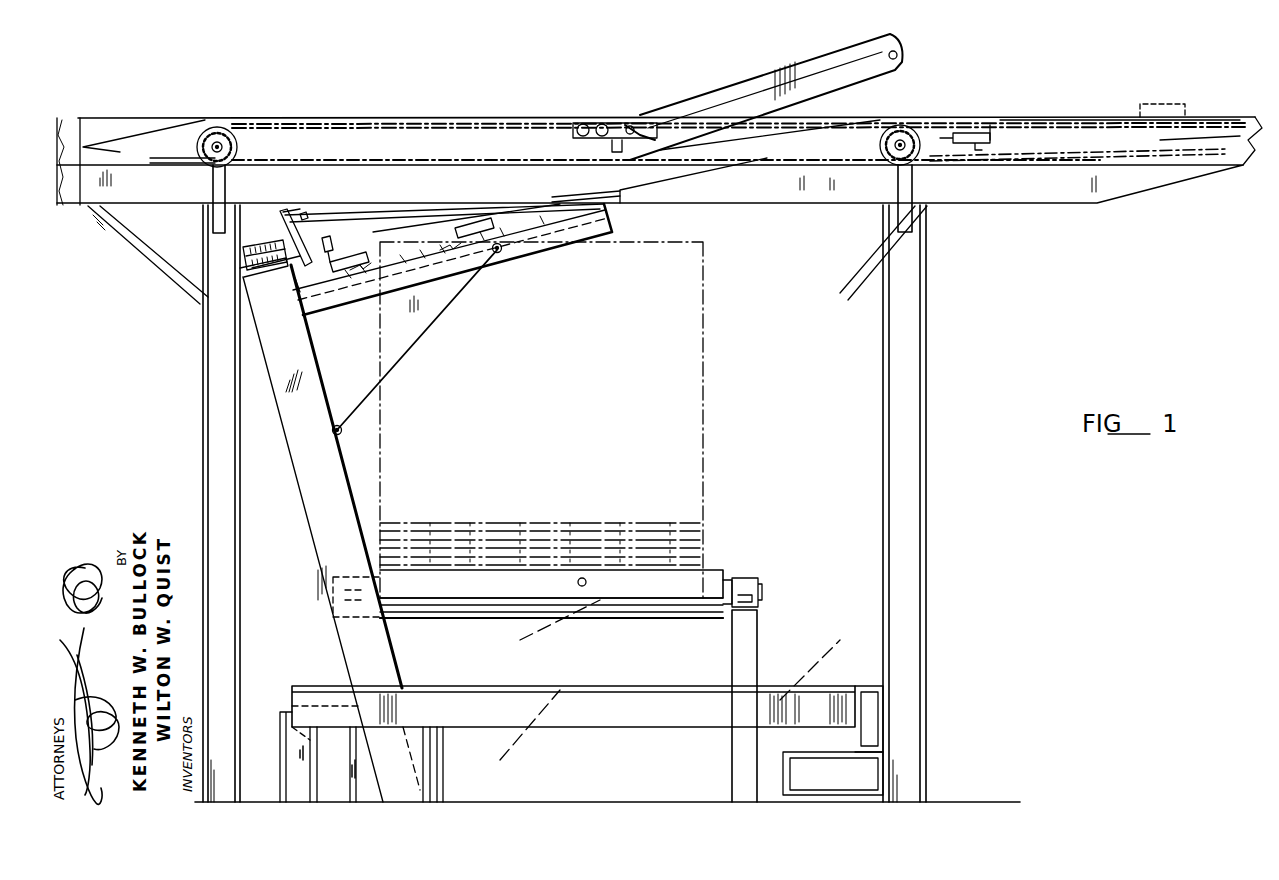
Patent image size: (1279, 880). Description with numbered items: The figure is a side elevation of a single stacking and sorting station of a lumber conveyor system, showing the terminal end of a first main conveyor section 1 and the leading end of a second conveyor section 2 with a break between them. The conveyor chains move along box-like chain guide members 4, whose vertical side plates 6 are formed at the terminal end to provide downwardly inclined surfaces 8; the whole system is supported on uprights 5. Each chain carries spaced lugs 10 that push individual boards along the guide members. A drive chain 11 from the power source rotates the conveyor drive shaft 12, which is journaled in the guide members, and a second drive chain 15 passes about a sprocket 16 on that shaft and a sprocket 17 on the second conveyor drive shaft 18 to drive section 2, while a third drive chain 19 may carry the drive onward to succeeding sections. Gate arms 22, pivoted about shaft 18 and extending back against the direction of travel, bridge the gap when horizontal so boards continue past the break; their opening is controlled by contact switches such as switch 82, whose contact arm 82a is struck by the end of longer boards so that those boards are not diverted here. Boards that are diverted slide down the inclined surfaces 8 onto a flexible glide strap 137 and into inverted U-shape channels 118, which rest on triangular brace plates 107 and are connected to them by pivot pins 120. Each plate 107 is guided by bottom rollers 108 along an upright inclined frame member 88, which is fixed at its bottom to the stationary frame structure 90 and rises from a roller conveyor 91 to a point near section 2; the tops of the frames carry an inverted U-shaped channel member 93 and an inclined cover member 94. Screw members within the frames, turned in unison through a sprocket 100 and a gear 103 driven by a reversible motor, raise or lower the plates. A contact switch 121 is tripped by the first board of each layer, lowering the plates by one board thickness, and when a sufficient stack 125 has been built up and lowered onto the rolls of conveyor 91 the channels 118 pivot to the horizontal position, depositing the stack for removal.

The first main conveyor section 1 is at (1072, 225).
The second conveyor section 2 is at (666, 129).
The chain guide members 4 is at (175, 194).
The uprights 5 is at (204, 400).
The vertical side plates 6 is at (408, 188).
The inclined surfaces 8 is at (132, 139).
The spaced lugs 10 is at (1190, 110).
The drive chain 11 is at (1052, 117).
The conveyor drive shaft 12 is at (898, 153).
The second drive chain 15 is at (782, 158).
The sprocket 16 is at (906, 132).
The sprocket 17 is at (630, 120).
The second conveyor drive shaft 18 is at (648, 130).
The third drive chain 19 is at (477, 122).
The gate arms 22 is at (788, 66).
The contact switch 82 is at (968, 132).
The contact arm 82a is at (990, 125).
The frame members 88 is at (300, 510).
The frame structure 90 is at (432, 681).
The roller conveyor 91 is at (736, 572).
The inverted U-shaped channel member 93 is at (262, 276).
The inclined cover member 94 is at (283, 226).
The sprocket 100 is at (244, 270).
The gear 103 is at (250, 247).
The triangular brace plate 107 is at (418, 326).
The bottom rollers 108 is at (337, 426).
The inverted U-shape channel 118 is at (527, 247).
The pivot pin 120 is at (500, 254).
The contact switch 121 is at (345, 245).
The stack 125 is at (684, 372).
The first flexible glide strap 137 is at (606, 198).